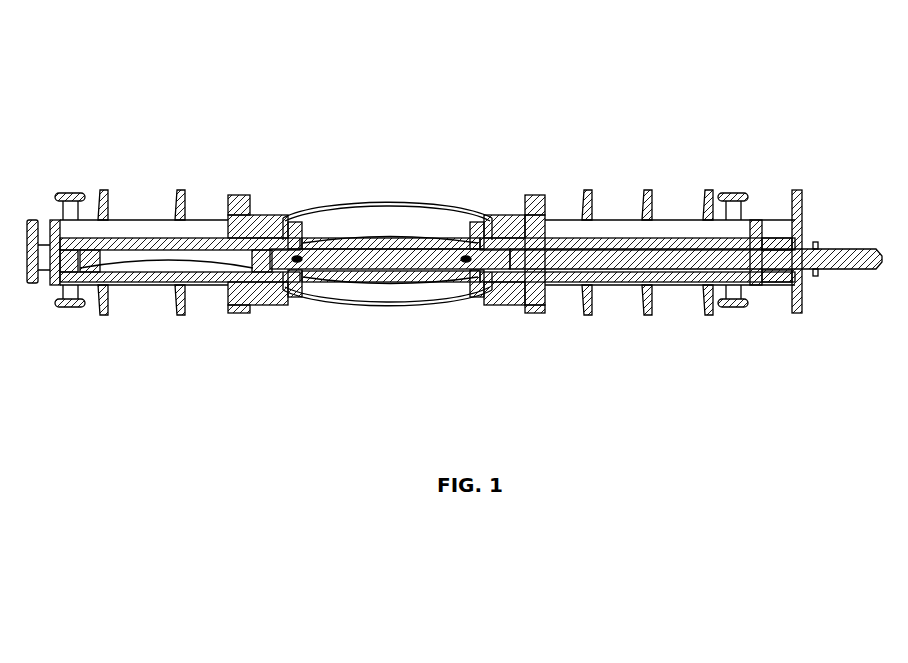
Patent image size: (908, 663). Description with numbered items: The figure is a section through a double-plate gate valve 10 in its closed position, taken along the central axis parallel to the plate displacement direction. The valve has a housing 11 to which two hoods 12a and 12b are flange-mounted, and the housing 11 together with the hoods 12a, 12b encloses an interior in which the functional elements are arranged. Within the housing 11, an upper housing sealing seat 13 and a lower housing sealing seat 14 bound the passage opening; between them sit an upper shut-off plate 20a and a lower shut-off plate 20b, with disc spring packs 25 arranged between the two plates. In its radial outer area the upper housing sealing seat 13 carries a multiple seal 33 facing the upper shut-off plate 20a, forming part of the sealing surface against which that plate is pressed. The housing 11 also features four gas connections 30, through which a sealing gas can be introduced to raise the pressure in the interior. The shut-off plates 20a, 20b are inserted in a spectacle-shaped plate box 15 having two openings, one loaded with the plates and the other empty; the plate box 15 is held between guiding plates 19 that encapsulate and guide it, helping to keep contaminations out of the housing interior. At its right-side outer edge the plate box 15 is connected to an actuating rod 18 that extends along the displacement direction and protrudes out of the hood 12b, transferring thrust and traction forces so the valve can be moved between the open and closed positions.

The double-plate gate valve 10 is at (638, 96).
The housing 11 is at (517, 232).
The hood 12a is at (142, 230).
The hood 12b is at (622, 235).
The upper housing sealing seat 13 is at (400, 215).
The lower housing sealing seat 14 is at (290, 286).
The plate box 15 is at (265, 262).
The actuating rod 18 is at (838, 270).
The guiding plates 19 is at (667, 280).
The upper shut-off plate 20a is at (353, 246).
The lower shut-off plate 20b is at (373, 283).
The disc spring packs 25 is at (462, 288).
The gas connections 30 is at (738, 193).
The multiple seal 33 is at (285, 233).